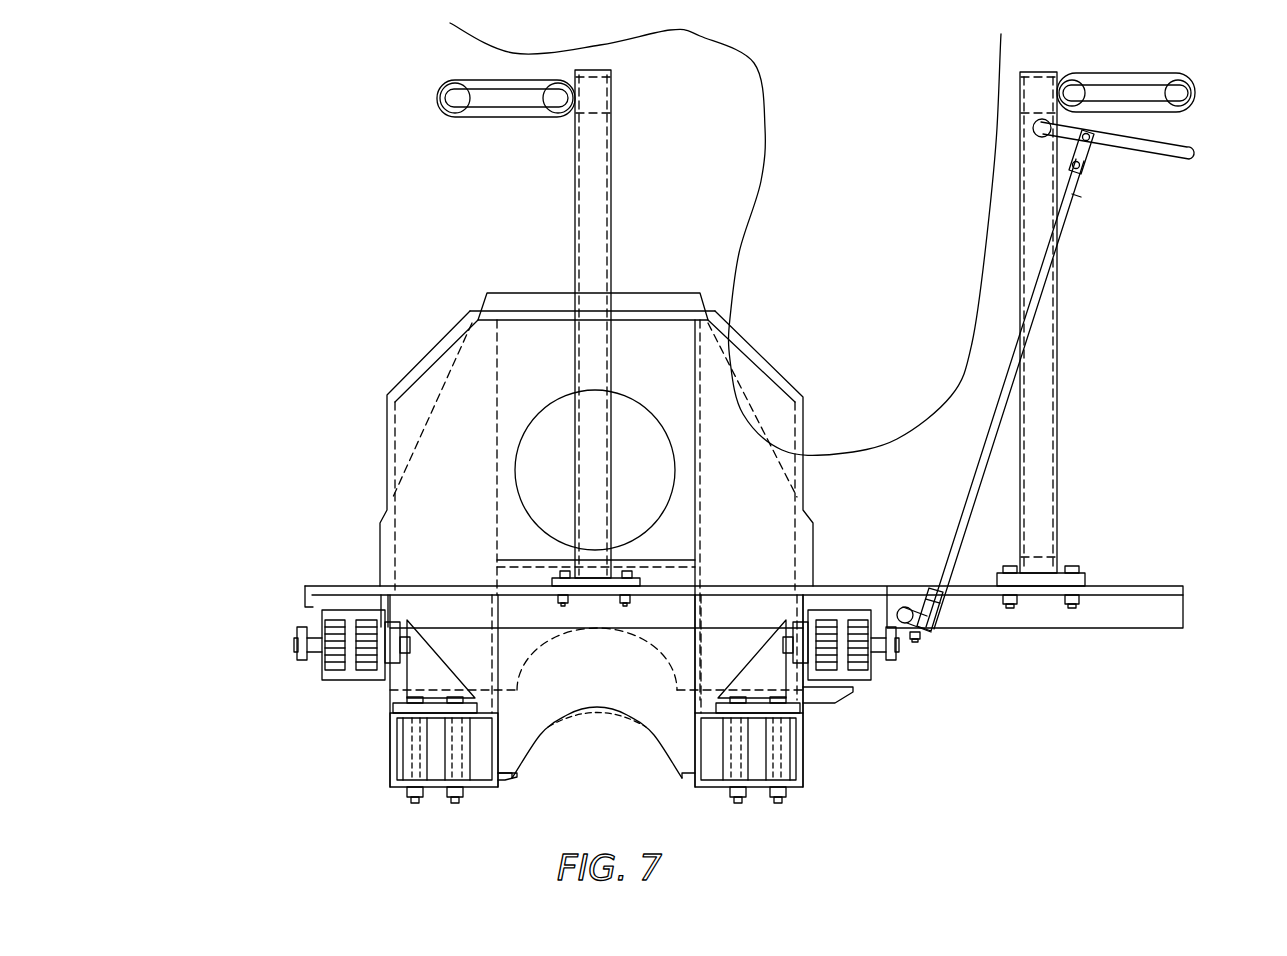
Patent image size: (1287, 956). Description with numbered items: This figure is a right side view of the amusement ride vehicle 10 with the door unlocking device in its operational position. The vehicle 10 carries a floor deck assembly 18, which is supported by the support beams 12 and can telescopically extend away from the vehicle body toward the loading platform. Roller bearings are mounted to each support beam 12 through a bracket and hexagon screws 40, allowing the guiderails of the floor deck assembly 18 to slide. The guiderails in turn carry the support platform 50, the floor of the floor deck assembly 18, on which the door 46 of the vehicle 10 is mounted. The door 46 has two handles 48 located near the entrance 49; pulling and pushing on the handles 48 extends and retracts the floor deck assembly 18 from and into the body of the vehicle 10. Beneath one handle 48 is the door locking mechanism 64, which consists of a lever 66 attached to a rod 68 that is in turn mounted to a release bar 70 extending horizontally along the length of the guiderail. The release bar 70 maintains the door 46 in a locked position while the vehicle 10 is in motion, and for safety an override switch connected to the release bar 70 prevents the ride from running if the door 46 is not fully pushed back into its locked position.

The amusement ride vehicle 10 is at (278, 145).
The support beam 12 is at (492, 787).
The floor deck assembly 18 is at (245, 568).
The hexagon screw 40 is at (780, 744).
The door 46 is at (483, 227).
The handle 48 is at (455, 83).
The entrance 49 is at (752, 60).
The support platform 50 is at (322, 586).
The door locking mechanism 64 is at (1145, 202).
The lever 66 is at (1193, 150).
The rod 68 is at (1040, 300).
The release bar 70 is at (932, 648).